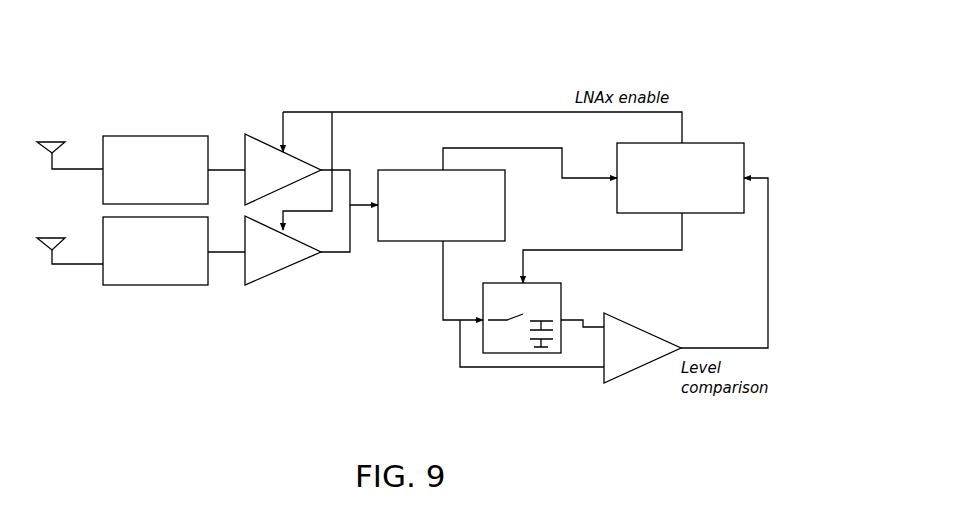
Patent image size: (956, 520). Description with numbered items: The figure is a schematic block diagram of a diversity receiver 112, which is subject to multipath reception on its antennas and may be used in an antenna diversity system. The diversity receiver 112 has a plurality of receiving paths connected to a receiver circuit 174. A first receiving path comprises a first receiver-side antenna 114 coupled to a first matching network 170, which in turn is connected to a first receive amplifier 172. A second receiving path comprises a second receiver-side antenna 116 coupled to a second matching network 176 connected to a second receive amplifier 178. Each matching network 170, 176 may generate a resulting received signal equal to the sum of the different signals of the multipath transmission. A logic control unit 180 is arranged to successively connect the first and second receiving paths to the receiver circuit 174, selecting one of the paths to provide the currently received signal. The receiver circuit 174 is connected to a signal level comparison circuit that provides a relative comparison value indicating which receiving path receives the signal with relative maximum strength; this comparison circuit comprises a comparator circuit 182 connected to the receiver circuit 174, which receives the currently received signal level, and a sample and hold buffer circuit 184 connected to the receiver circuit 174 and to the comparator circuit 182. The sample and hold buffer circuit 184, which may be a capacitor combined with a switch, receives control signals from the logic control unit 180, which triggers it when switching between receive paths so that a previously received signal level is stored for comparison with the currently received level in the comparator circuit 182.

The diversity receiver 112 is at (483, 46).
The first receiver-side antenna 114 is at (52, 143).
The second receiver-side antenna 116 is at (43, 238).
The first matching network 170 is at (150, 147).
The first receive amplifier 172 is at (270, 162).
The receiver circuit 174 is at (498, 208).
The second matching network 176 is at (180, 267).
The second receive amplifier 178 is at (270, 267).
The logic control unit 180 is at (698, 158).
The comparator circuit 182 is at (653, 345).
The sample & hold buffer circuit 184 is at (551, 300).